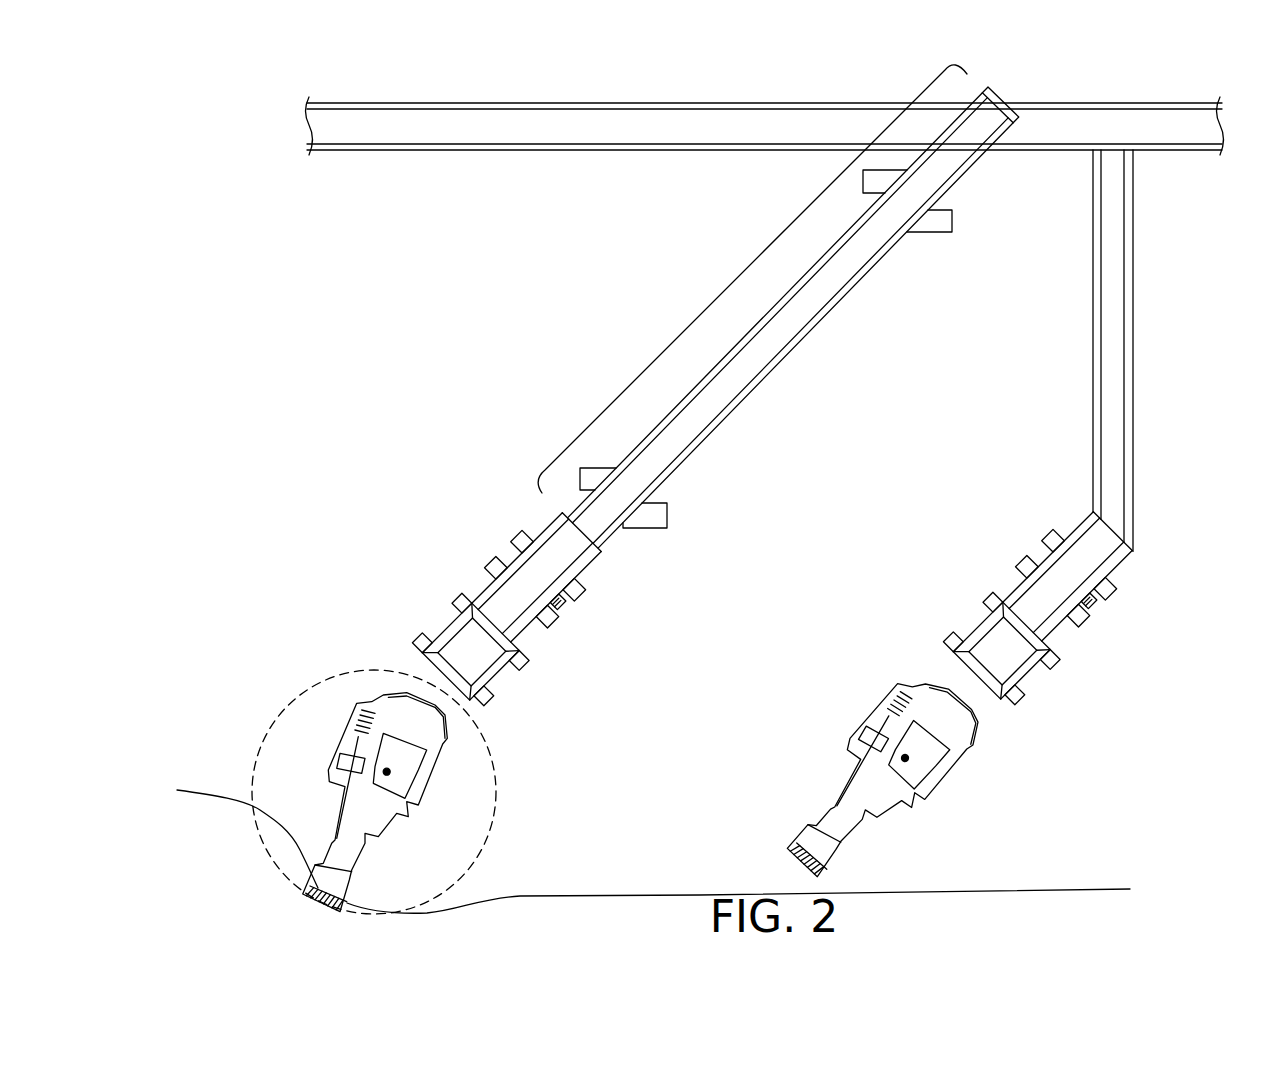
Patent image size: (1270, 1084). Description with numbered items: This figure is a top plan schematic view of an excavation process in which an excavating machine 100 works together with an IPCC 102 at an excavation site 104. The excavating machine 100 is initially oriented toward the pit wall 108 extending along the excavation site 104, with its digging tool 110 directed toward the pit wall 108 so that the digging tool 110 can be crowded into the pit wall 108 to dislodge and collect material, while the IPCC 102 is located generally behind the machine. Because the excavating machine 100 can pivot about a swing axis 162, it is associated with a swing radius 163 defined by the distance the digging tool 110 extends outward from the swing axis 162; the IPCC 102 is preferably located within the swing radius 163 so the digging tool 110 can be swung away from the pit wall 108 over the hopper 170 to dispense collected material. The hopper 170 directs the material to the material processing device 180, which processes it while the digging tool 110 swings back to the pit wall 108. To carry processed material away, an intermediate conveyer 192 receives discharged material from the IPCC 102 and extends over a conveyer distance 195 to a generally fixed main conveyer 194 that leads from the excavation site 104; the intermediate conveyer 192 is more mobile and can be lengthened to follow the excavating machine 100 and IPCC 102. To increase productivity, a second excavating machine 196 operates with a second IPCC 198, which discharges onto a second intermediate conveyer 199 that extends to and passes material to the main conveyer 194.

The excavating machine 100 is at (332, 757).
The IPCC 102 is at (707, 317).
The excavation site 104 is at (716, 655).
The pit wall 108 is at (288, 842).
The digging tool 110 is at (340, 912).
The swing axis 162 is at (387, 772).
The swing radius 163 is at (373, 667).
The hopper 170 is at (437, 637).
The material processing device 180 is at (492, 612).
The intermediate conveyer 192 is at (790, 318).
The main conveyer 194 is at (812, 120).
The conveyer distance 195 is at (740, 284).
The second excavating machine 196 is at (982, 793).
The second IPCC 198 is at (1095, 350).
The second intermediate conveyer 199 is at (1135, 438).